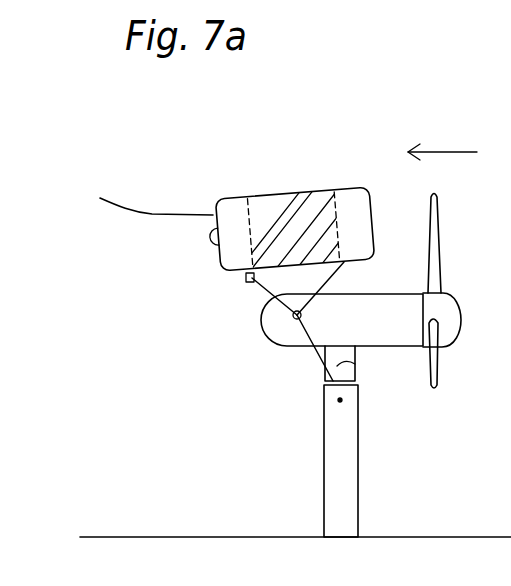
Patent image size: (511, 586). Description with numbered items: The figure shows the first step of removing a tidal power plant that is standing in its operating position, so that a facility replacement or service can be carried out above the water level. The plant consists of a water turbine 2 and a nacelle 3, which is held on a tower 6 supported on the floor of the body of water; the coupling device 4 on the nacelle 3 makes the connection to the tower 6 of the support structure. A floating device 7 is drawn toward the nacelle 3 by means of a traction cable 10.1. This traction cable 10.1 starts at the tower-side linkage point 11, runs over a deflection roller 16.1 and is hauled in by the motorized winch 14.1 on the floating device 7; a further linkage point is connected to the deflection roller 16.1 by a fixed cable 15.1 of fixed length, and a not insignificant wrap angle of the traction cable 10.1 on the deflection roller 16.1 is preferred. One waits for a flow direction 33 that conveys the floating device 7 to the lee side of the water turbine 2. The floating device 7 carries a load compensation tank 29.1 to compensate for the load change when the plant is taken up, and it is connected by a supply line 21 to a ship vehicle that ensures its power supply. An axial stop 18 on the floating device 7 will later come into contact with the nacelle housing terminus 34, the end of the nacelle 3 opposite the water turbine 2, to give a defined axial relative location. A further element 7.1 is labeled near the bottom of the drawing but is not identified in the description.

The water turbine 2 is at (447, 312).
The nacelle 3 is at (357, 331).
The coupling device 4 is at (355, 365).
The tower 6 is at (340, 502).
The floating device 7 is at (322, 190).
The ground 7.1 is at (147, 537).
The traction cable 10.1 is at (313, 359).
The tower-side linkage point 11 is at (340, 400).
The motorized winch 14.1 is at (247, 281).
The fixed cable 15.1 is at (343, 262).
The deflection roller 16.1 is at (272, 345).
The axial stop 18 is at (208, 241).
The supply line 21 is at (139, 213).
The load compensation tank 29.1 is at (255, 220).
The flow direction 33 is at (459, 152).
The nacelle housing terminus 34 is at (270, 310).